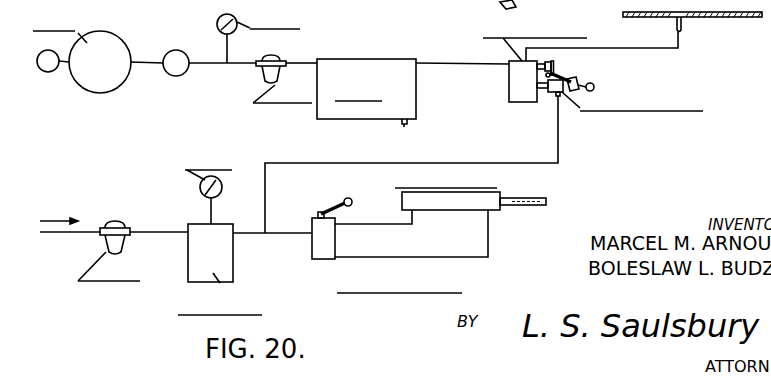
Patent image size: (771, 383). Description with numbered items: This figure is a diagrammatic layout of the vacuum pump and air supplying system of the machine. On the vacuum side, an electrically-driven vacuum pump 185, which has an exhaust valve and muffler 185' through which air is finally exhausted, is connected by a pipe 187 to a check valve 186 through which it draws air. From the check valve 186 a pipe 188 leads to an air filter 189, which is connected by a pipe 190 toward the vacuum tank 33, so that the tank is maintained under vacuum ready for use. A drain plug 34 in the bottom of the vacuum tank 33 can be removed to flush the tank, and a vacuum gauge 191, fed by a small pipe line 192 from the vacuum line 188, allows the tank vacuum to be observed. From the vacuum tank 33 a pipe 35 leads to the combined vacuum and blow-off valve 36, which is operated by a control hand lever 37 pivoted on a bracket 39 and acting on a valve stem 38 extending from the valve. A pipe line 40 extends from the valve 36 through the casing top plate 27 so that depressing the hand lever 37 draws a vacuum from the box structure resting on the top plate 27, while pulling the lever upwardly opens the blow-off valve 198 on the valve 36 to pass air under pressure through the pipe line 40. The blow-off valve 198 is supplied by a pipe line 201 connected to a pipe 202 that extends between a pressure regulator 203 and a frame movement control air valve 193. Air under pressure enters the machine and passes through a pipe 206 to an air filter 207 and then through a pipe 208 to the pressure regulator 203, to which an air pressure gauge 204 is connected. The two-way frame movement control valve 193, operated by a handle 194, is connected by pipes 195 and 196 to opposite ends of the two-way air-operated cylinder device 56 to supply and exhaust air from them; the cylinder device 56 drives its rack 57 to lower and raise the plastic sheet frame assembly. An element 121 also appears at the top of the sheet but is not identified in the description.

The vacuum pump 185 is at (96, 47).
The exhaust valve and muffler 185' is at (52, 72).
The pipe 187 is at (145, 66).
The check valve 186 is at (172, 76).
The pipe 188 is at (208, 66).
The vacuum gauge 191 is at (218, 15).
The small pipe line 192 is at (226, 49).
The air filter 189 is at (281, 55).
The pipe 190 is at (300, 62).
The vacuum tank 33 is at (388, 40).
The drain plug 34 is at (409, 122).
The pipe 35 is at (461, 50).
The vacuum control valve 36 is at (515, 90).
The valve stem 38 is at (548, 68).
The bracket 39 is at (577, 75).
The control hand lever 37 is at (593, 80).
The blow-off valve 198 is at (552, 97).
The pipe line 40 is at (684, 58).
The casing top plate 27 is at (692, 27).
The support element 121 is at (526, 6).
The pipe line 201 is at (467, 163).
The air pressure gauge 204 is at (224, 179).
The pipe 202 is at (285, 235).
The pipe 206 is at (76, 233).
The air filter 207 is at (126, 243).
The pipe 208 is at (180, 223).
The pressure regulator 203 is at (272, 257).
The frame movement control air valve 193 is at (333, 228).
The handle 194 is at (322, 211).
The pipe 195 is at (373, 223).
The air-operated cylinder device 56 is at (438, 198).
The rack 57 is at (512, 198).
The pipe 196 is at (490, 238).